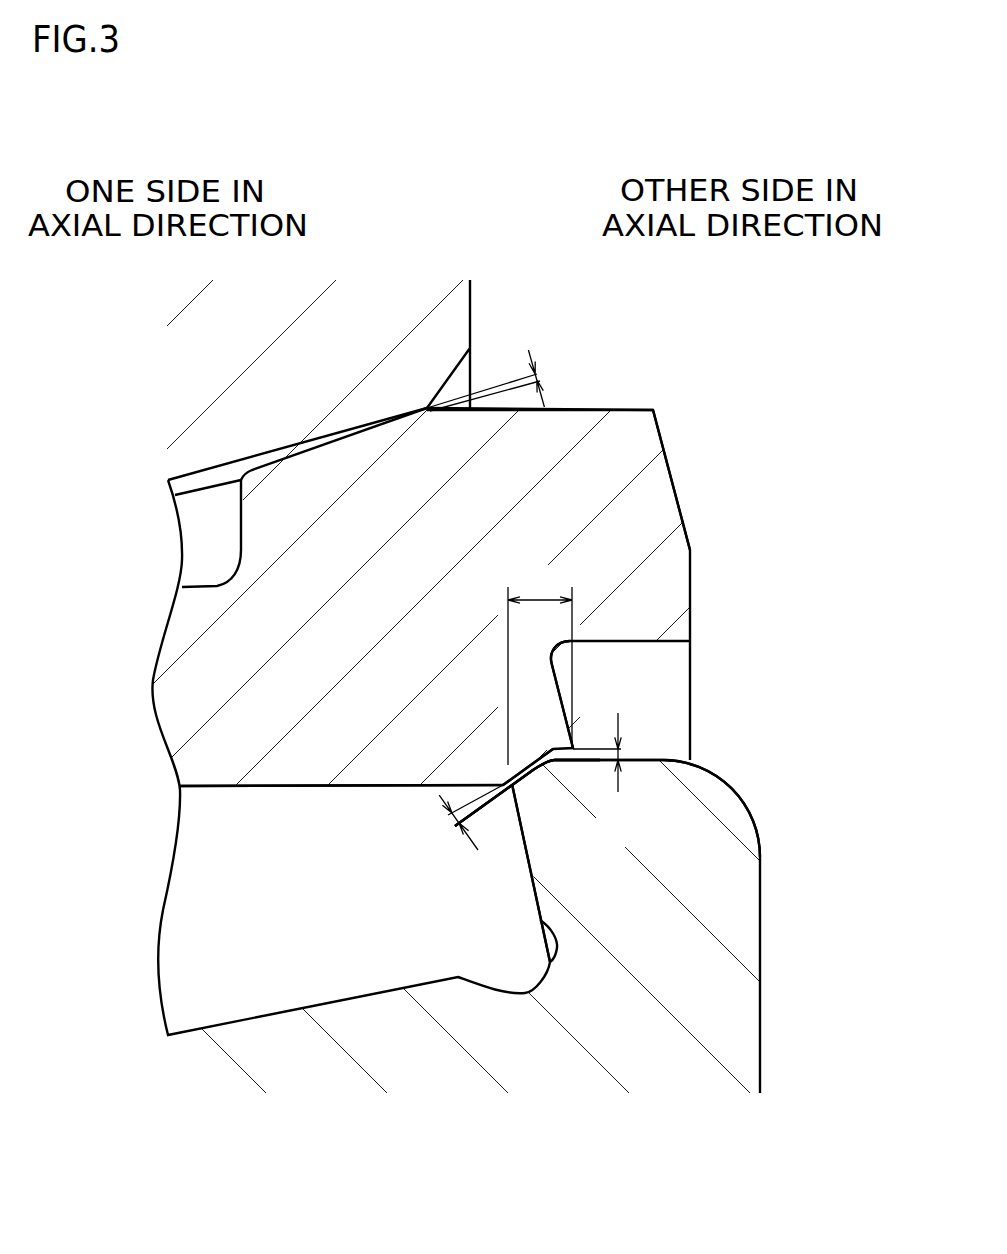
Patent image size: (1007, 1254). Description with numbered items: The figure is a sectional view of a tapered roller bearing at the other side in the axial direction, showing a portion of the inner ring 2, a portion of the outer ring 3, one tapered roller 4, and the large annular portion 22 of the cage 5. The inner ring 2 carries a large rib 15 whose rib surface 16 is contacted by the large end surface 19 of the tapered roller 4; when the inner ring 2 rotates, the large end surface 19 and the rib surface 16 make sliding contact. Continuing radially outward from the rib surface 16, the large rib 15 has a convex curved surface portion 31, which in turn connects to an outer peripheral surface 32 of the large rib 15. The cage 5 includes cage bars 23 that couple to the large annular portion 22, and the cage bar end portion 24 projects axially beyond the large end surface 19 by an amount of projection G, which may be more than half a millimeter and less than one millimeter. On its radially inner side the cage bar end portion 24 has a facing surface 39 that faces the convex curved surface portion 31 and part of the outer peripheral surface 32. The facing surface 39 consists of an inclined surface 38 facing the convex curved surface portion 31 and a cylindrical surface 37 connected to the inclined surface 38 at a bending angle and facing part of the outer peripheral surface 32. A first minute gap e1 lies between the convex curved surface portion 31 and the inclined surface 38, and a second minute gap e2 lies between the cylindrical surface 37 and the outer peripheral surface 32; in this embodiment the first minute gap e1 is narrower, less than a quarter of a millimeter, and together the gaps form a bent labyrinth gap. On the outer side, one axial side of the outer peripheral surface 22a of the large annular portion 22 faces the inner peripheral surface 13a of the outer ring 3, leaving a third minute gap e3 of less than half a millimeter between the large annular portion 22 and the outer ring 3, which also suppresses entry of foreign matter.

The inner ring 2 is at (487, 1033).
The outer ring 3 is at (358, 318).
The tapered roller 4 is at (283, 988).
The cage 5 is at (658, 396).
The inner peripheral surface of the outer ring 13a is at (213, 468).
The large rib 15 is at (640, 807).
The rib surface 16 is at (530, 888).
The large end surface 19 is at (560, 946).
The large annular portion 22 is at (637, 505).
The outer peripheral surface of the large annular portion 22a is at (625, 408).
The cage bar 23 is at (405, 743).
The cage bar end portion 24 is at (563, 648).
The convex curved surface portion 31 is at (537, 763).
The outer peripheral surface of the large rib 32 is at (653, 756).
The cylindrical surface 37 is at (562, 765).
The inclined surface 38 is at (527, 780).
The facing surface 39 is at (622, 862).
The amount of projection G is at (540, 664).
The first minute gap e1 is at (450, 823).
The second minute gap e2 is at (623, 744).
The third minute gap e3 is at (549, 378).